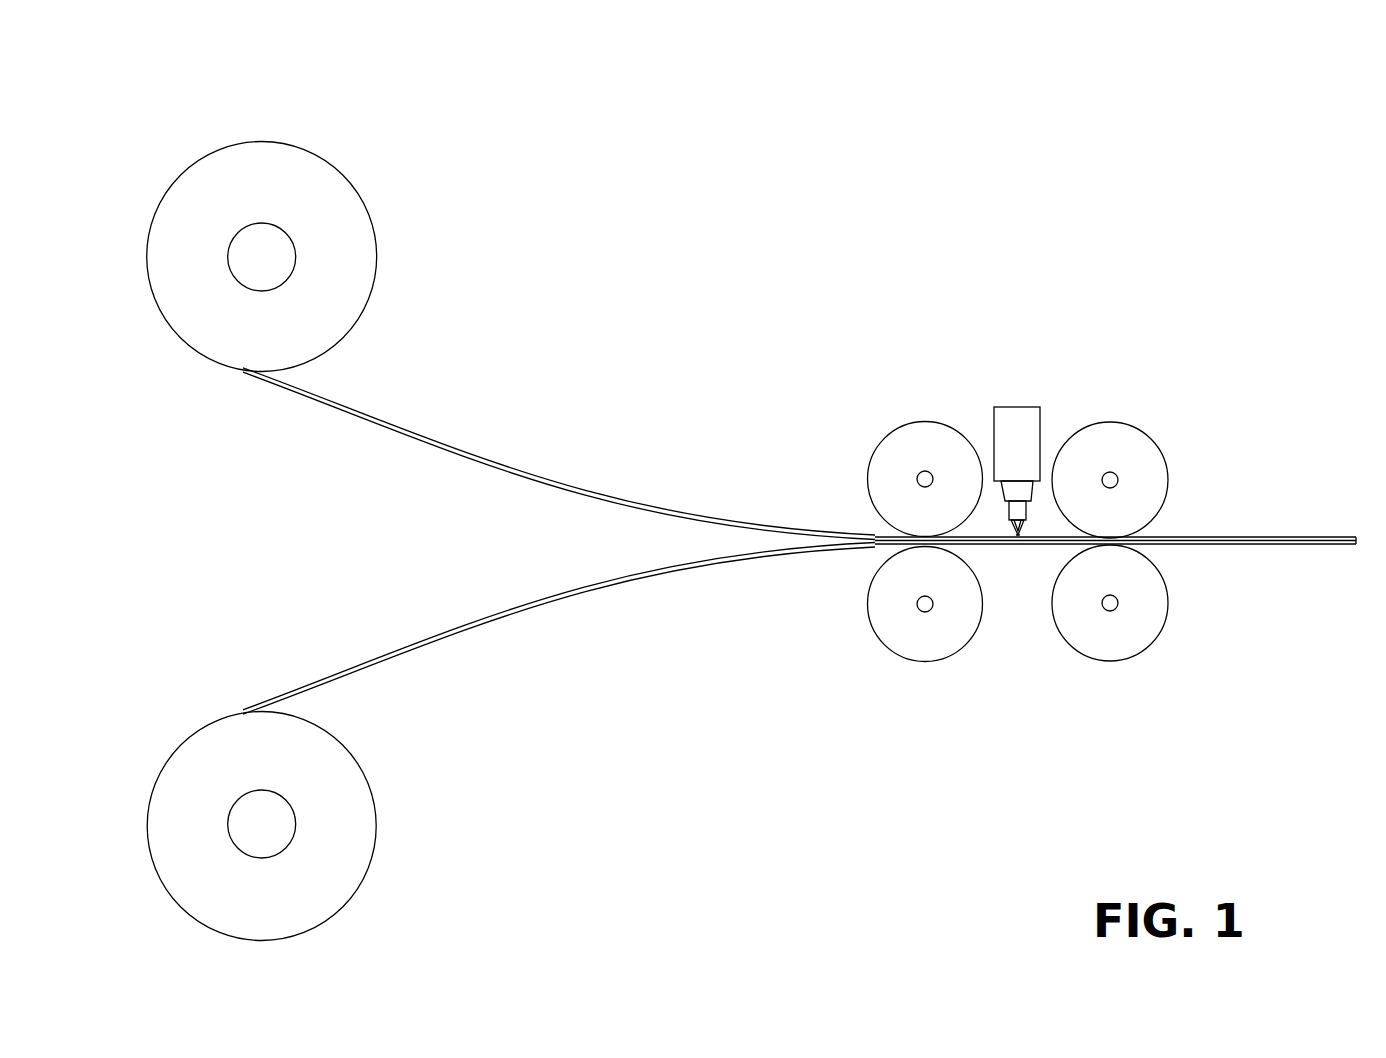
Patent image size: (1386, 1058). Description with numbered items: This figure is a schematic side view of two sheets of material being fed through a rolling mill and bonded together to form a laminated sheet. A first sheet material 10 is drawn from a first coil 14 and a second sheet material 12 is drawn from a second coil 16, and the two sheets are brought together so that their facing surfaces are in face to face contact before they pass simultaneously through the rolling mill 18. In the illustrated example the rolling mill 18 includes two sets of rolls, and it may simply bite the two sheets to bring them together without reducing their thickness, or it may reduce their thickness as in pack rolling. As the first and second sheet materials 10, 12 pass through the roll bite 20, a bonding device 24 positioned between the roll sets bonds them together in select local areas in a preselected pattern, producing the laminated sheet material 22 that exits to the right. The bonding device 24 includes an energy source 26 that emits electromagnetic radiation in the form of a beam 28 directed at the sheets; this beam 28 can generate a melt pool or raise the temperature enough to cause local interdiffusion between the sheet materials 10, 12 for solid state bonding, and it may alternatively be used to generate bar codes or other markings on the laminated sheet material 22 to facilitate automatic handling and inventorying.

The first sheet material 10 is at (474, 458).
The second sheet material 12 is at (452, 630).
The first coil 14 is at (272, 165).
The second coil 16 is at (343, 893).
The rolling mill 18 is at (878, 434).
The roll bite 20 is at (875, 556).
The laminated sheet material 22 is at (1228, 537).
The bonding device 24 is at (1028, 401).
The energy source 26 is at (1006, 455).
The beam 28 is at (1007, 540).